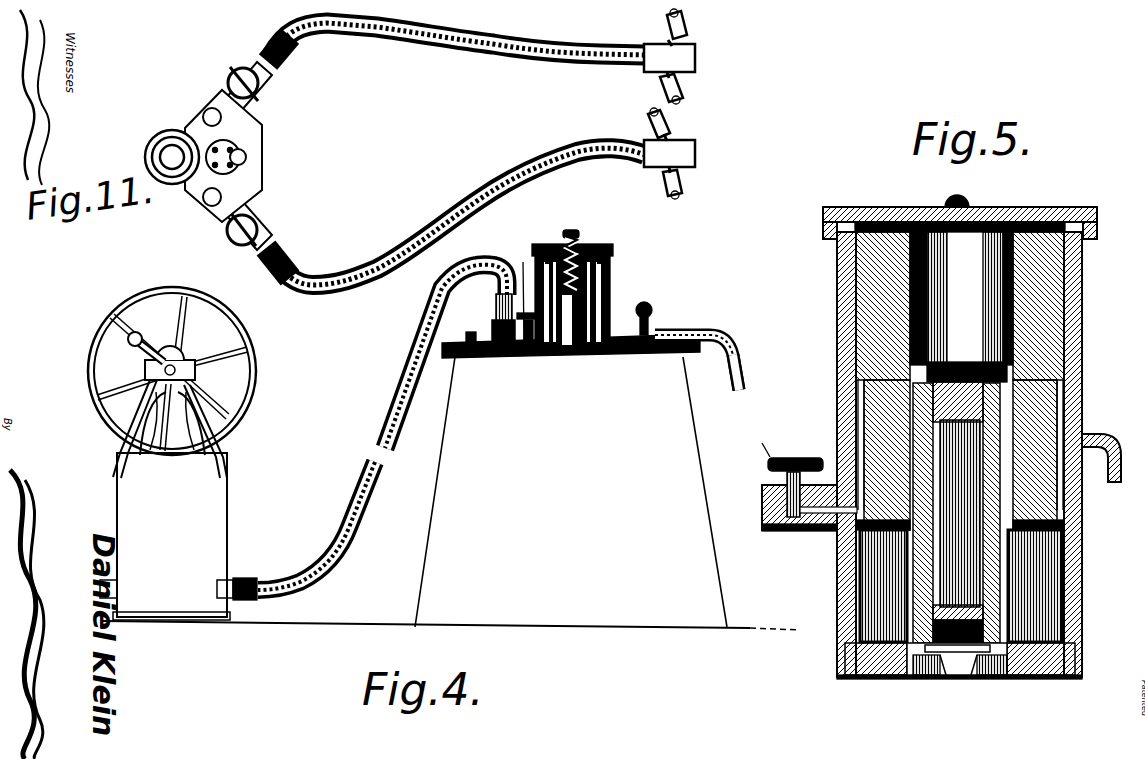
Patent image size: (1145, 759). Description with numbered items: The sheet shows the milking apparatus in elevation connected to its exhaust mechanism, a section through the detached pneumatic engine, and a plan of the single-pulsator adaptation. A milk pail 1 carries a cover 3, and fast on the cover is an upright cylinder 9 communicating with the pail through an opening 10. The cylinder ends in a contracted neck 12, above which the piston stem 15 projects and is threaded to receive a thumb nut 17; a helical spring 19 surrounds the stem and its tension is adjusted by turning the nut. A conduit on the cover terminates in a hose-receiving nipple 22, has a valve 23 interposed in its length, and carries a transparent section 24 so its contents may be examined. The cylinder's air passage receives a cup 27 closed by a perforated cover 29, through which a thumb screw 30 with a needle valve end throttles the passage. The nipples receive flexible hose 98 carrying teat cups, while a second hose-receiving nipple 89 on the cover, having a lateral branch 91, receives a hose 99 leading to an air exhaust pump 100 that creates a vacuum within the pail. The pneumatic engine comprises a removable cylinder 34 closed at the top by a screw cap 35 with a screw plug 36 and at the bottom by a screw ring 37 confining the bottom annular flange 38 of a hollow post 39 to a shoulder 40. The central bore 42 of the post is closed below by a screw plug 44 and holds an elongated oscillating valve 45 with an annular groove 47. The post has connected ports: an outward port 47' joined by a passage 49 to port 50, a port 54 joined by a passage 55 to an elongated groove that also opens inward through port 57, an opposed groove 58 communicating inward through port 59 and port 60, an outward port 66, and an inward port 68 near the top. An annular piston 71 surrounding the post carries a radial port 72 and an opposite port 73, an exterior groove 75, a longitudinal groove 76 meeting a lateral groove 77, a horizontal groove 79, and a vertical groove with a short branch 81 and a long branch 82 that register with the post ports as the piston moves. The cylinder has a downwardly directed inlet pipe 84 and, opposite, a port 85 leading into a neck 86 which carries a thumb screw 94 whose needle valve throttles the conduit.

In FIG. 4, the milk pail 1 is at (437, 531).
In FIG. 4, the cover 3 is at (445, 350).
In FIG. 11, the upright cylinder 9 is at (160, 133).
In FIG. 11, the opening 10 is at (167, 156).
In FIG. 4, the neck 12 is at (612, 280).
In FIG. 4, the stem 15 is at (594, 243).
In FIG. 4, the thumb nut 17 is at (572, 230).
In FIG. 4, the helical spring 19 is at (555, 244).
In FIG. 4, the hose-receiving nipple 22 is at (668, 330).
In FIG. 11, the valve 23 is at (240, 74).
In FIG. 4, the valve 23 is at (652, 318).
In FIG. 4, the transparent section 24 is at (610, 360).
In FIG. 11, the cup 27 is at (222, 125).
In FIG. 11, the perforated cover 29 is at (230, 172).
In FIG. 11, the thumb screw 30 is at (245, 155).
In FIG. 5, the cylinder 34 is at (1062, 528).
In FIG. 5, the screw cap 35 is at (1030, 215).
In FIG. 5, the screw plug 36 is at (955, 180).
In FIG. 5, the screw ring 37 is at (1040, 680).
In FIG. 5, the bottom annular flange 38 is at (882, 680).
In FIG. 5, the hollow post 39 is at (1040, 620).
In FIG. 5, the shoulder 40 is at (835, 638).
In FIG. 5, the central bore 42 is at (970, 350).
In FIG. 5, the screw plug 44 is at (985, 680).
In FIG. 5, the oscillating valve 45 is at (940, 595).
In FIG. 5, the annular groove 47 is at (1028, 596).
In FIG. 5, the port 47' is at (937, 702).
In FIG. 5, the passage 49 is at (1062, 592).
In FIG. 5, the port 50 is at (925, 575).
In FIG. 5, the port 54 is at (863, 540).
In FIG. 5, the passage 55 is at (885, 493).
In FIG. 5, the port 57 is at (930, 432).
In FIG. 5, the port or groove 58 is at (1038, 455).
In FIG. 5, the port 59 is at (1032, 481).
In FIG. 5, the port 60 is at (1085, 480).
In FIG. 5, the port 66 is at (884, 455).
In FIG. 5, the port 68 is at (1030, 456).
In FIG. 5, the annular piston 71 is at (1060, 275).
In FIG. 5, the radial through port 72 is at (848, 355).
In FIG. 5, the radial through port 73 is at (1060, 355).
In FIG. 5, the exterior groove 75 is at (858, 382).
In FIG. 5, the longitudinal groove 76 is at (862, 418).
In FIG. 5, the lateral groove 77 is at (768, 523).
In FIG. 5, the horizontal groove 79 is at (1062, 383).
In FIG. 5, the short branch 81 is at (1070, 345).
In FIG. 5, the long branch 82 is at (1062, 410).
In FIG. 4, the inlet pipe 84 is at (610, 313).
In FIG. 5, the port 85 is at (770, 458).
In FIG. 5, the neck 86 is at (765, 488).
In FIG. 4, the hose-receiving nipple 89 is at (472, 360).
In FIG. 4, the lateral branch 91 is at (523, 360).
In FIG. 4, the thumb screw 94 is at (522, 280).
In FIG. 5, the thumb screw 94 is at (778, 457).
In FIG. 11, the flexible hose 98 is at (498, 56).
In FIG. 4, the flexible hose 98 is at (722, 336).
In FIG. 4, the hose 99 is at (420, 337).
In FIG. 4, the air exhaust pump 100 is at (222, 482).